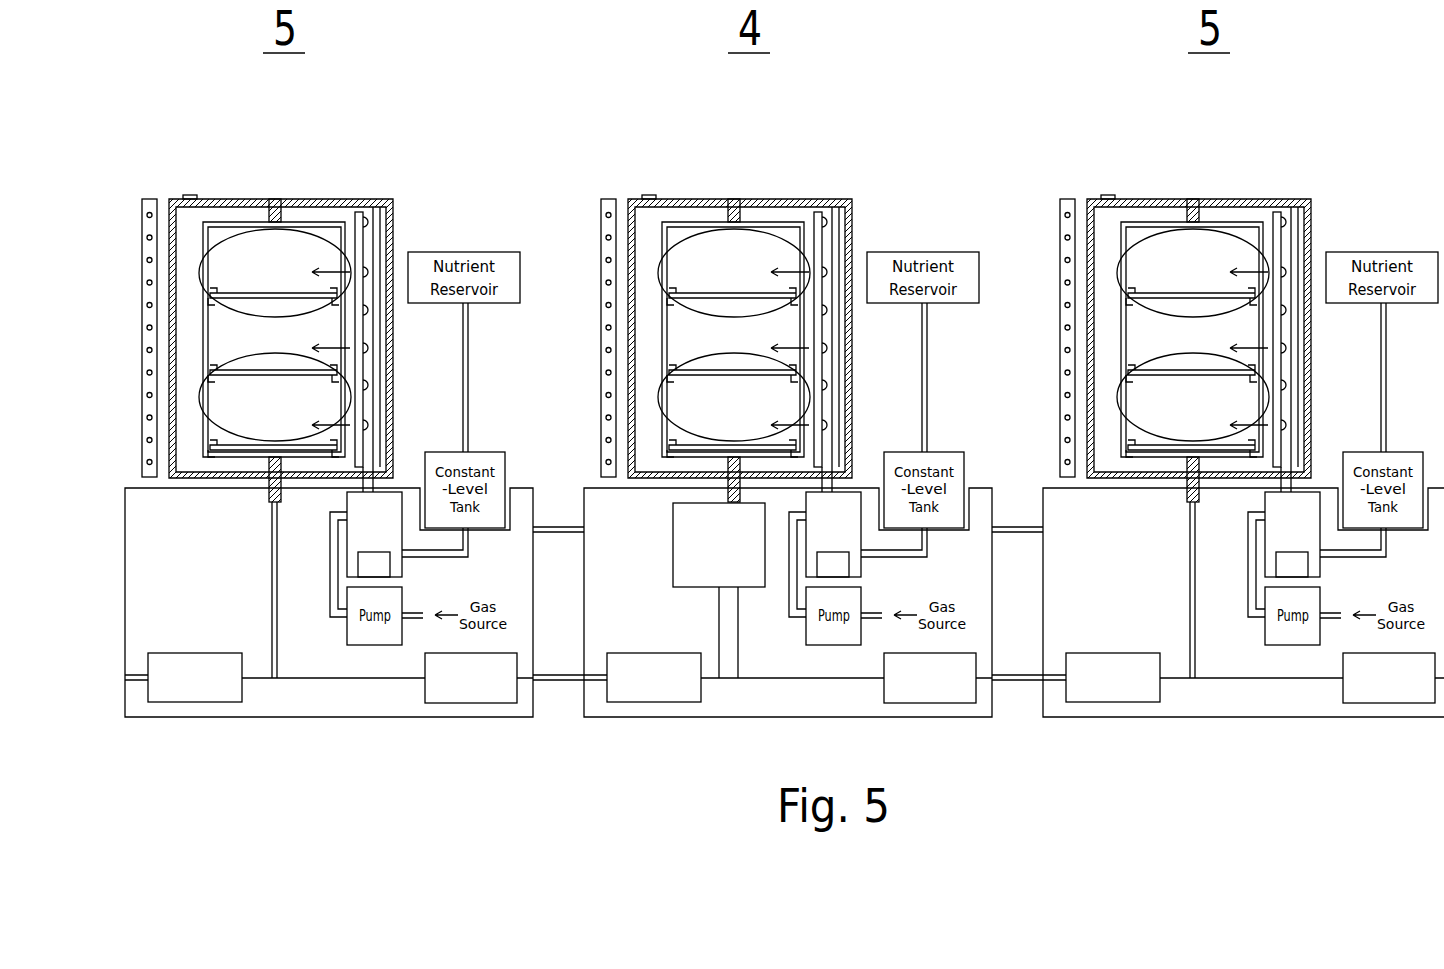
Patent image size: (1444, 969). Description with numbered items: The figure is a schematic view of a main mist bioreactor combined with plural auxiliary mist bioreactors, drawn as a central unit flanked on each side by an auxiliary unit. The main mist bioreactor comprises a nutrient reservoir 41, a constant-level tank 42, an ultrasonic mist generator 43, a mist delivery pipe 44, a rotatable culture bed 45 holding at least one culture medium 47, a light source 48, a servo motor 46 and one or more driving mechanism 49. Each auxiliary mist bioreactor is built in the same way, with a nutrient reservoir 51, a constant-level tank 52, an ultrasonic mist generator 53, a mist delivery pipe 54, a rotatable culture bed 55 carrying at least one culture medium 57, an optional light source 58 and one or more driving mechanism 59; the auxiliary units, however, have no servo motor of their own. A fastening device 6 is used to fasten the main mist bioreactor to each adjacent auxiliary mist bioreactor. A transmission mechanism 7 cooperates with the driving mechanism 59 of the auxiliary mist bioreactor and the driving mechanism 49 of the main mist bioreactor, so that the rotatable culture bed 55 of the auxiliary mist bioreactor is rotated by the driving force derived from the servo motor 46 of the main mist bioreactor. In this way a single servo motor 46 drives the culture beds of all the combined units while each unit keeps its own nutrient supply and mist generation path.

The light source 58 is at (638, 307).
The rotatable culture bed 55 is at (733, 289).
The mist delivery pipe 54 is at (850, 311).
The nutrient reservoir 51 is at (923, 252).
The culture medium 57 is at (789, 372).
The constant-level tank 52 is at (910, 467).
The ultrasonic mist generator 53 is at (854, 551).
The driving mechanism 59 is at (791, 656).
The light source 48 is at (611, 200).
The rotatable culture bed 45 is at (767, 222).
The mist delivery pipe 44 is at (832, 217).
The nutrient reservoir 41 is at (932, 252).
The culture medium 47 is at (796, 298).
The constant-level tank 42 is at (914, 453).
The ultrasonic mist generator 43 is at (864, 558).
The driving mechanism 49 is at (622, 672).
The servo motor 46 is at (688, 543).
The fastening device 6 is at (788, 490).
The transmission mechanism 7 is at (788, 639).